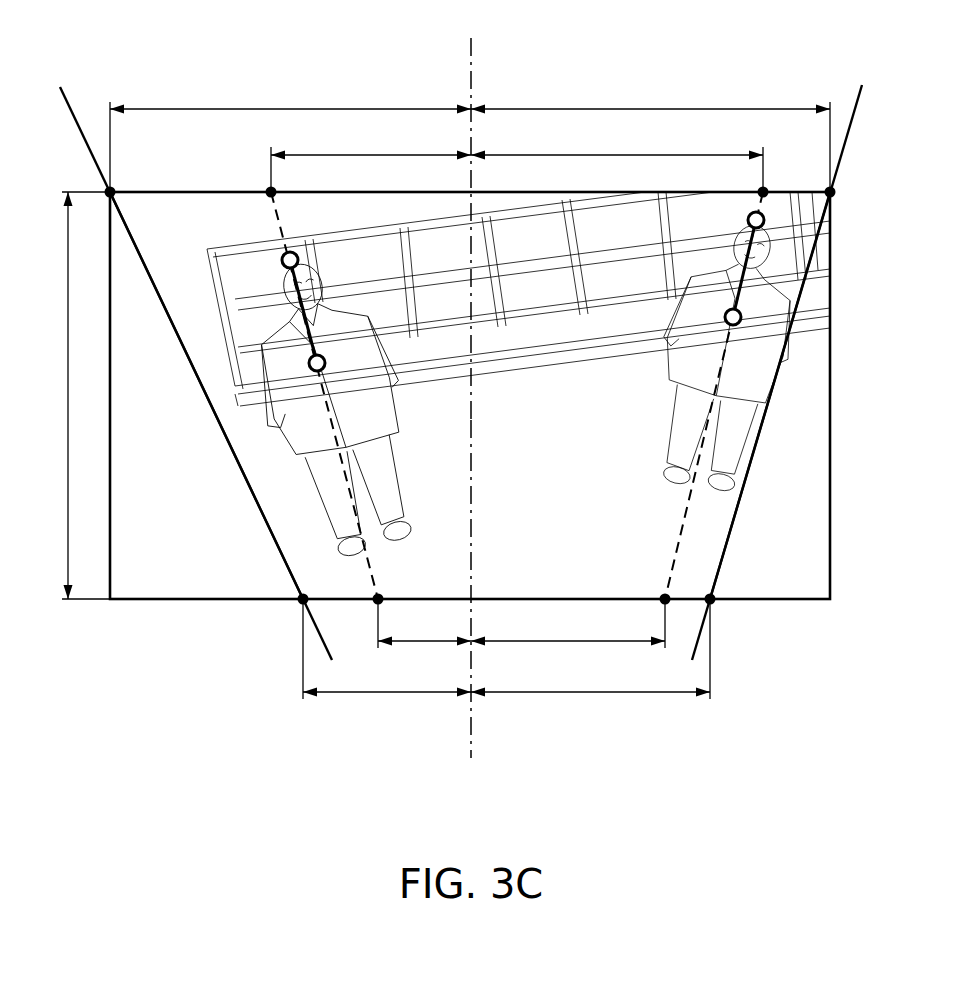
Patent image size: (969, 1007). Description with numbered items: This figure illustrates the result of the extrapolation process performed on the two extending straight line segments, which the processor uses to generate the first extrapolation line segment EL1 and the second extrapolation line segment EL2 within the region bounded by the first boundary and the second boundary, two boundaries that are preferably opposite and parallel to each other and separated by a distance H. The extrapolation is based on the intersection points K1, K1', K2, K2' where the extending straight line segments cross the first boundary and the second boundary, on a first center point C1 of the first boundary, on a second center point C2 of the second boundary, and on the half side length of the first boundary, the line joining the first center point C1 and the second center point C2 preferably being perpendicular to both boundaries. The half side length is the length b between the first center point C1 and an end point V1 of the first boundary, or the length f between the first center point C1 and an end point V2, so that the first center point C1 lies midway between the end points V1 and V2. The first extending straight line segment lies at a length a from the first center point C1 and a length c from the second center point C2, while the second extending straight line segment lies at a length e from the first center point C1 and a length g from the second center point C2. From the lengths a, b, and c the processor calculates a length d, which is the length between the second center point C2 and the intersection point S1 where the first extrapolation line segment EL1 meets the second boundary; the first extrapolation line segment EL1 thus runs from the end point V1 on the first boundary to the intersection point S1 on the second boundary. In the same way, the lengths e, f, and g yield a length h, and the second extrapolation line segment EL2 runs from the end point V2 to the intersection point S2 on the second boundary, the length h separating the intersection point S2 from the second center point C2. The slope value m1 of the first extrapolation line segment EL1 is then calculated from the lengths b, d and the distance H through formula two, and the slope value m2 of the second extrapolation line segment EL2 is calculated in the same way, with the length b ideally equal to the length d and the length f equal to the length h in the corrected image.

The first center point C1 is at (471, 214).
The second center point C2 is at (471, 607).
The slope value m1 is at (788, 359).
The slope value m2 is at (186, 359).
The first extrapolation line segment EL1 is at (758, 434).
The second extrapolation line segment EL2 is at (225, 435).
The end point V1 is at (830, 192).
The end point V2 is at (110, 192).
The intersection point S1 is at (710, 599).
The intersection point S2 is at (303, 599).
The intersection point K1 is at (740, 364).
The intersection point K2 is at (297, 364).
The intersection point K1' is at (629, 582).
The intersection point K2' is at (417, 582).
The distance H is at (57, 395).
The length a is at (617, 143).
The length b is at (650, 97).
The length c is at (568, 629).
The length d is at (590, 680).
The length e is at (371, 143).
The length f is at (290, 97).
The length g is at (424, 629).
The length h is at (387, 680).